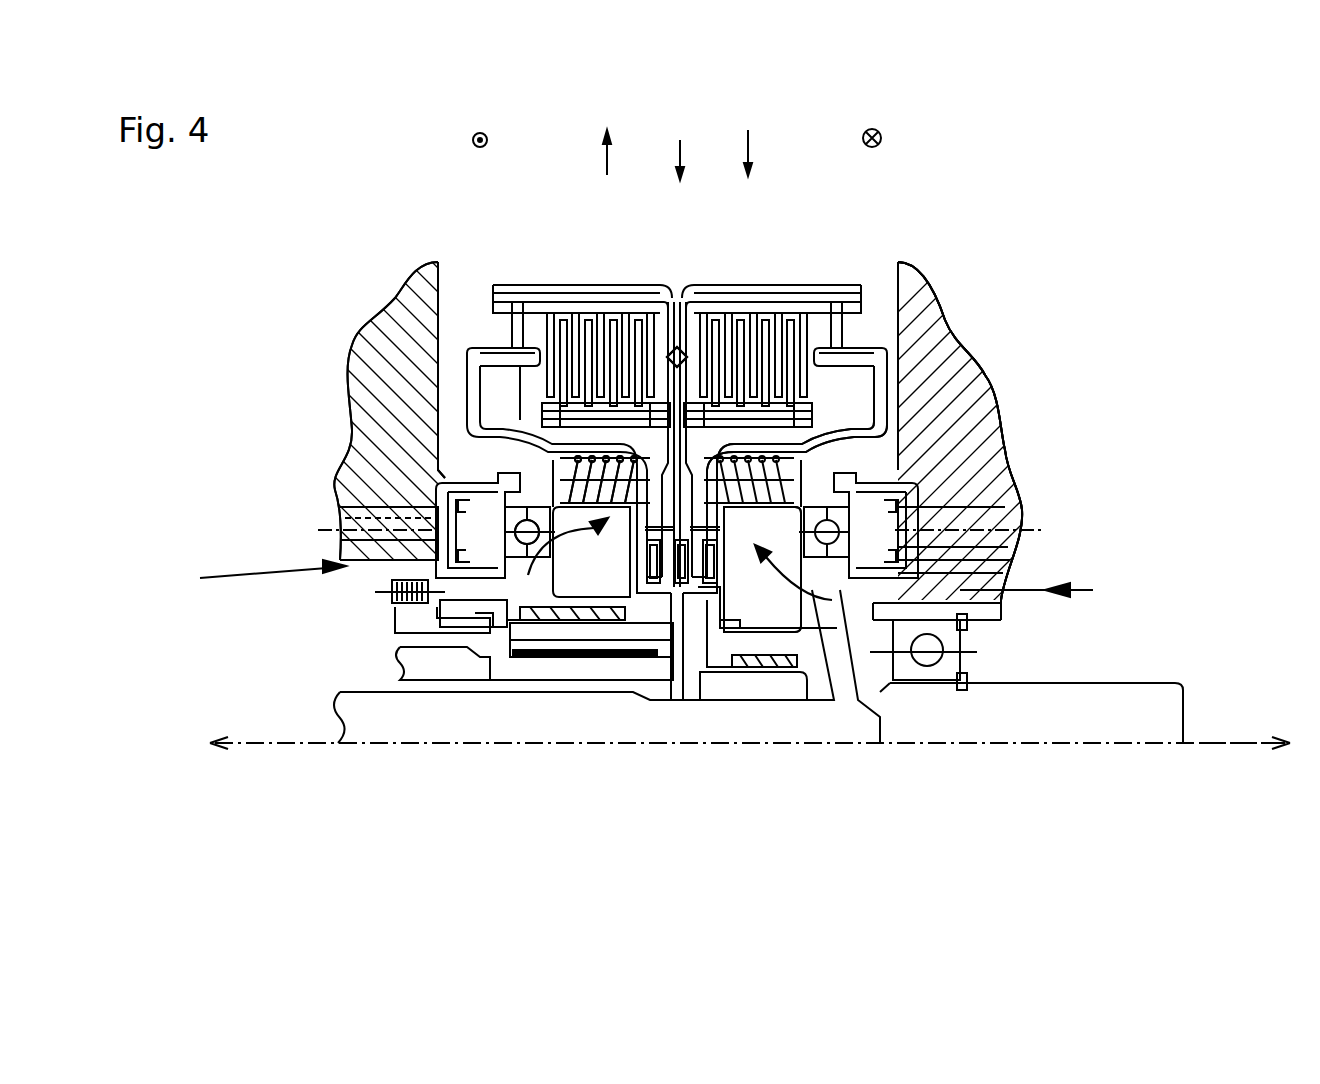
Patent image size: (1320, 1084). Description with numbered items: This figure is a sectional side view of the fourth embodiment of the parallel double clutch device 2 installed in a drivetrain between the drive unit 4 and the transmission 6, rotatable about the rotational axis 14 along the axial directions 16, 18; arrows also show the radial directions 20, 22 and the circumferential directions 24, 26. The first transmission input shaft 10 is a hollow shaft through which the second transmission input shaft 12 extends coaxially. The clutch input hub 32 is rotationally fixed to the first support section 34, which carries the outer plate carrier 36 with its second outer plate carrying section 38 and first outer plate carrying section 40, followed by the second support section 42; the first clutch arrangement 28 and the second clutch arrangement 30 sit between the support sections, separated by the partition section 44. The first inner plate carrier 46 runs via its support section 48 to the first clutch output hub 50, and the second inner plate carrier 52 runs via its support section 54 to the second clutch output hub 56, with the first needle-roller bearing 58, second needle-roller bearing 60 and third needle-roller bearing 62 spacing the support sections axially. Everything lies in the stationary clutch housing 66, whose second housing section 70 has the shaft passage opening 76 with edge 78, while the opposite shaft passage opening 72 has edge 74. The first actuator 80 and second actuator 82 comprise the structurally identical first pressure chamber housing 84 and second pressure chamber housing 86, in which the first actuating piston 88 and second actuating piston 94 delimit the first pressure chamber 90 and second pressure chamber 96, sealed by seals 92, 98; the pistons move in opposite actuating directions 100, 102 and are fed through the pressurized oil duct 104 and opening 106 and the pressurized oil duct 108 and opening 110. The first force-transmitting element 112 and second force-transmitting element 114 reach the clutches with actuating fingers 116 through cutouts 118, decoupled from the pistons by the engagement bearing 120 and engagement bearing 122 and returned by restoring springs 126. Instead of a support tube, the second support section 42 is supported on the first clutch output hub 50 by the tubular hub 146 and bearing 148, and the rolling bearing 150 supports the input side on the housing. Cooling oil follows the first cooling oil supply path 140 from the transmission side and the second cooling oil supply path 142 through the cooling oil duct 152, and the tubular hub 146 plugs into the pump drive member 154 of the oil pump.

The parallel double clutch device 2 is at (681, 144).
The drive unit 4 is at (1187, 471).
The transmission 6 is at (115, 456).
The first transmission input shaft 10 is at (425, 663).
The second transmission input shaft 12 is at (370, 718).
The rotational axis 14 is at (450, 612).
The axial direction 16 is at (1256, 745).
The axial direction 18 is at (262, 745).
The radial direction 20 is at (604, 160).
The radial direction 22 is at (748, 143).
The circumferential direction 24 is at (470, 142).
The circumferential direction 26 is at (883, 139).
The first clutch arrangement 28 is at (590, 385).
The second clutch arrangement 30 is at (747, 380).
The clutch input hub 32 is at (1115, 713).
The first support section 34 is at (830, 413).
The outer plate carrier 36 is at (878, 295).
The second outer plate carrying section 38 is at (815, 320).
The first outer plate carrying section 40 is at (543, 310).
The second support section 42 is at (467, 378).
The partition section 44 is at (680, 345).
The first inner plate carrier 46 is at (581, 330).
The support section 48 is at (653, 330).
The first clutch output hub 50 is at (660, 690).
The second inner plate carrier 52 is at (754, 330).
The support section 54 is at (691, 330).
The second clutch output hub 56 is at (735, 665).
The first needle-roller bearing 58 is at (768, 682).
The second needle-roller bearing 60 is at (712, 700).
The third needle-roller bearing 62 is at (668, 585).
The clutch housing 66 is at (418, 338).
The second housing section 70 is at (918, 330).
The shaft passage opening 72 is at (390, 592).
The edge 74 is at (360, 562).
The shaft passage opening 76 is at (985, 680).
The edge 78 is at (985, 640).
The first actuator 80 is at (460, 347).
The second actuator 82 is at (925, 457).
The first pressure chamber housing 84 is at (440, 482).
The second pressure chamber housing 86 is at (925, 478).
The first actuating piston 88 is at (485, 535).
The first pressure chamber 90 is at (452, 515).
The seals 92 is at (452, 500).
The second actuating piston 94 is at (880, 608).
The second pressure chamber 96 is at (915, 514).
The seals 98 is at (915, 508).
The actuating direction 100 is at (548, 605).
The actuating direction 102 is at (790, 560).
The pressurized oil duct 104 is at (352, 537).
The opening 106 is at (430, 528).
The pressurized oil duct 108 is at (935, 537).
The opening 110 is at (915, 545).
The first force-transmitting element 112 is at (545, 440).
The second force-transmitting element 114 is at (880, 377).
The actuating fingers 116 is at (471, 300).
The cutouts 118 is at (515, 345).
The engagement bearing 120 is at (535, 560).
The engagement bearing 122 is at (845, 605).
The restoring spring 126 is at (535, 442).
The first cooling oil supply path 140 is at (246, 578).
The second cooling oil supply path 142 is at (1073, 590).
The tubular hub 146 is at (590, 635).
The bearing 148 is at (608, 630).
The rolling bearing 150 is at (940, 678).
The cooling oil duct 152 is at (998, 600).
The pump drive member 154 is at (400, 610).